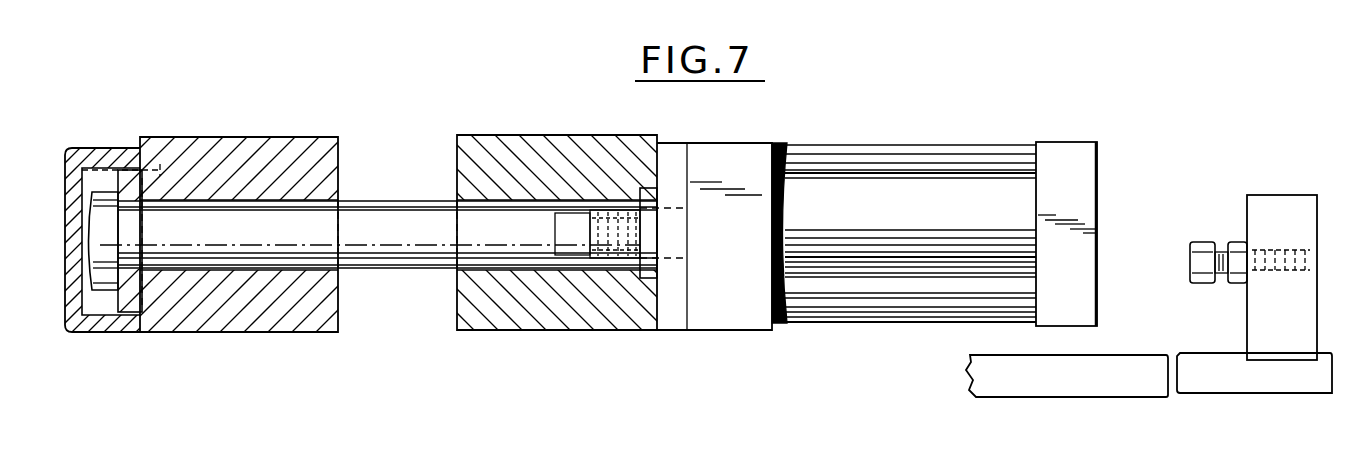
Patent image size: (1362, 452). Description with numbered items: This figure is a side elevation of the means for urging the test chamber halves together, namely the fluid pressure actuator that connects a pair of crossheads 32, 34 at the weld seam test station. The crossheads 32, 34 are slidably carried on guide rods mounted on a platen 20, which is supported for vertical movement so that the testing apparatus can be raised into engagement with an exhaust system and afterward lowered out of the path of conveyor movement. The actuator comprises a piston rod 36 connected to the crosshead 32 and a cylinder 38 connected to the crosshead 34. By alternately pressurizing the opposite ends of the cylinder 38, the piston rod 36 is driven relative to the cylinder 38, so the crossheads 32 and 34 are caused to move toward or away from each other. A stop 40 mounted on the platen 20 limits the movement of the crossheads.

The platen 20 is at (1110, 385).
The crosshead 32 is at (243, 322).
The crosshead 34 is at (578, 320).
The piston rod 36 is at (393, 212).
The cylinder 38 is at (737, 320).
The stop 40 is at (1200, 242).